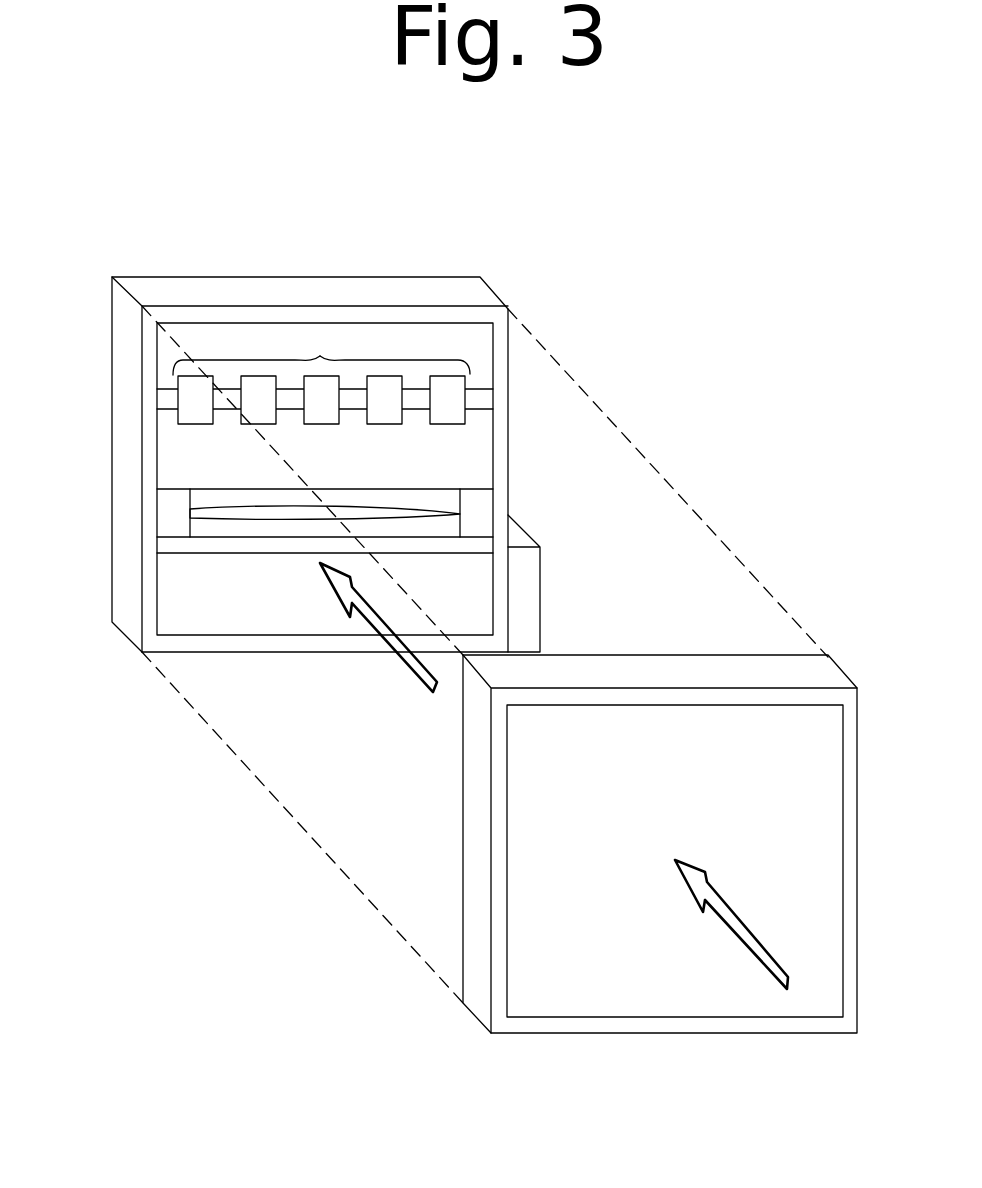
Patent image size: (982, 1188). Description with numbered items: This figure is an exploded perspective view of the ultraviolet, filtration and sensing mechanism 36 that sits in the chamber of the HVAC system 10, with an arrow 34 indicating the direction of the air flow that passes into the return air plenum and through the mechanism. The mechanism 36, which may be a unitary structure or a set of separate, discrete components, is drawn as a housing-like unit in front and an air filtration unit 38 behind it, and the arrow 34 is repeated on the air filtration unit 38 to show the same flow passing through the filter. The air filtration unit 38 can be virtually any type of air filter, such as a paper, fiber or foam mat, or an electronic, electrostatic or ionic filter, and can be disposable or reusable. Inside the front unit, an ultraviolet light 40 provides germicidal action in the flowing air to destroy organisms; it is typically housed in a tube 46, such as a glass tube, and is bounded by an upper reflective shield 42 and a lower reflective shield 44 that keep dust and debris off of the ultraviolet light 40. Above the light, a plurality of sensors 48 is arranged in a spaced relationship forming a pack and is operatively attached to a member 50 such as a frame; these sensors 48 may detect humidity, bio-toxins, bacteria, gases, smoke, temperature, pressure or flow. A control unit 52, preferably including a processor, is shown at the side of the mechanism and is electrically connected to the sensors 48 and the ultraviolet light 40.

The HVAC system 10 is at (408, 435).
The arrow 34 is at (413, 670).
The ultraviolet, filtration and sensing mechanism 36 is at (660, 779).
The air filtration unit 38 is at (690, 831).
The ultraviolet light 40 is at (380, 482).
The upper reflective shield 42 is at (360, 489).
The lower reflective shield 44 is at (411, 538).
The tube 46 is at (212, 518).
The sensor 48 is at (320, 356).
The member 50 is at (287, 277).
The control unit 52 is at (541, 599).